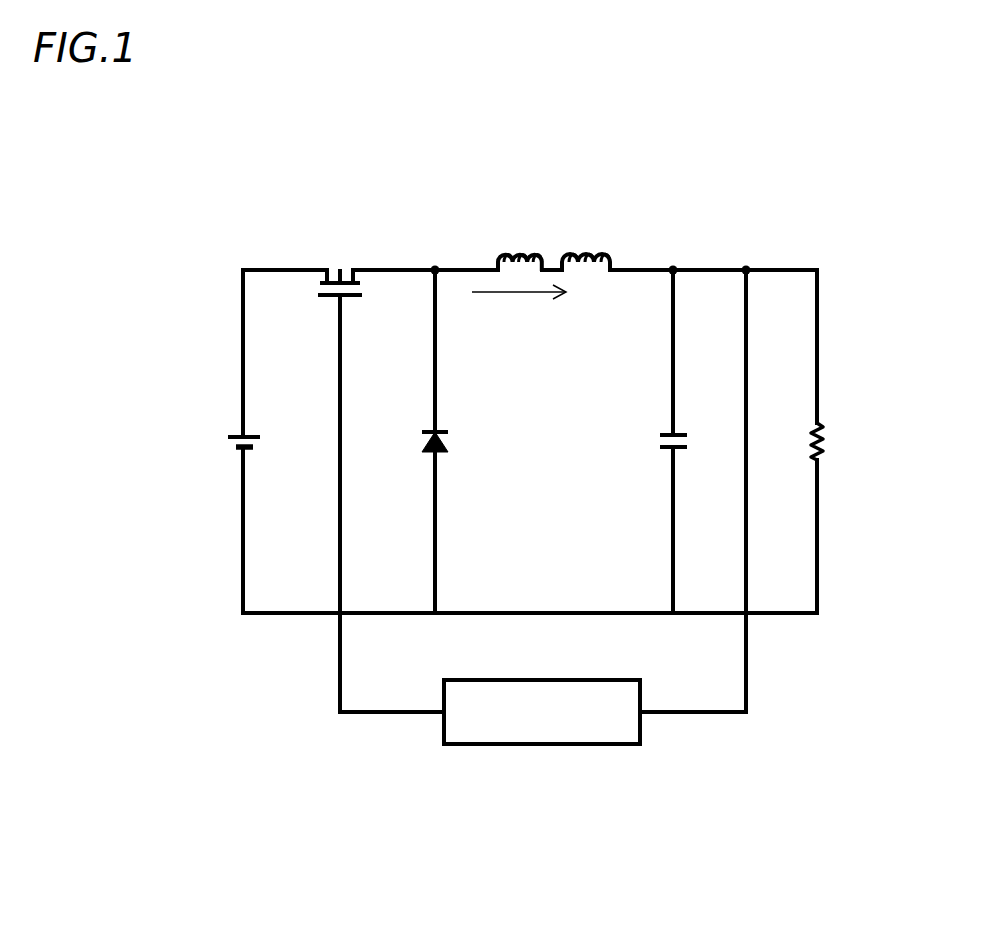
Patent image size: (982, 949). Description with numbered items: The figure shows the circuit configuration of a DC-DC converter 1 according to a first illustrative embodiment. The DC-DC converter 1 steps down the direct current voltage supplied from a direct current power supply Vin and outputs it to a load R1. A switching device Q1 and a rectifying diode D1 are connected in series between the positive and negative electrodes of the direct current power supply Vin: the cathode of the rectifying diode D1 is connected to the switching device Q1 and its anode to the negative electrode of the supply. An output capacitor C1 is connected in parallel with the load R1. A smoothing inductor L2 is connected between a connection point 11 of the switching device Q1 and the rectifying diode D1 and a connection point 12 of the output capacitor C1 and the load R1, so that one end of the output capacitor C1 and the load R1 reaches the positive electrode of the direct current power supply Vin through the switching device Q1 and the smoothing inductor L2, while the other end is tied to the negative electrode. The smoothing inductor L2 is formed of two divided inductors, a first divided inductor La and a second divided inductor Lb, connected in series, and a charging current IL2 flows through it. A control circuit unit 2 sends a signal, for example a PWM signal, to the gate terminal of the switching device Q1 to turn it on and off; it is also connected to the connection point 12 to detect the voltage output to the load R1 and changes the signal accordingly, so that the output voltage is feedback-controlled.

The DC-DC converter 1 is at (215, 103).
The control circuit unit 2 is at (541, 746).
The connection point 11 is at (435, 268).
The connection point 12 is at (673, 268).
The switching device Q1 is at (382, 478).
The rectifying diode D1 is at (450, 441).
The smoothing inductor L2 is at (607, 222).
The first divided inductor La is at (520, 247).
The second divided inductor Lb is at (586, 247).
The output capacitor C1 is at (691, 441).
The load R1 is at (833, 441).
The direct current power supply Vin is at (215, 446).
The charging current IL2 is at (536, 294).